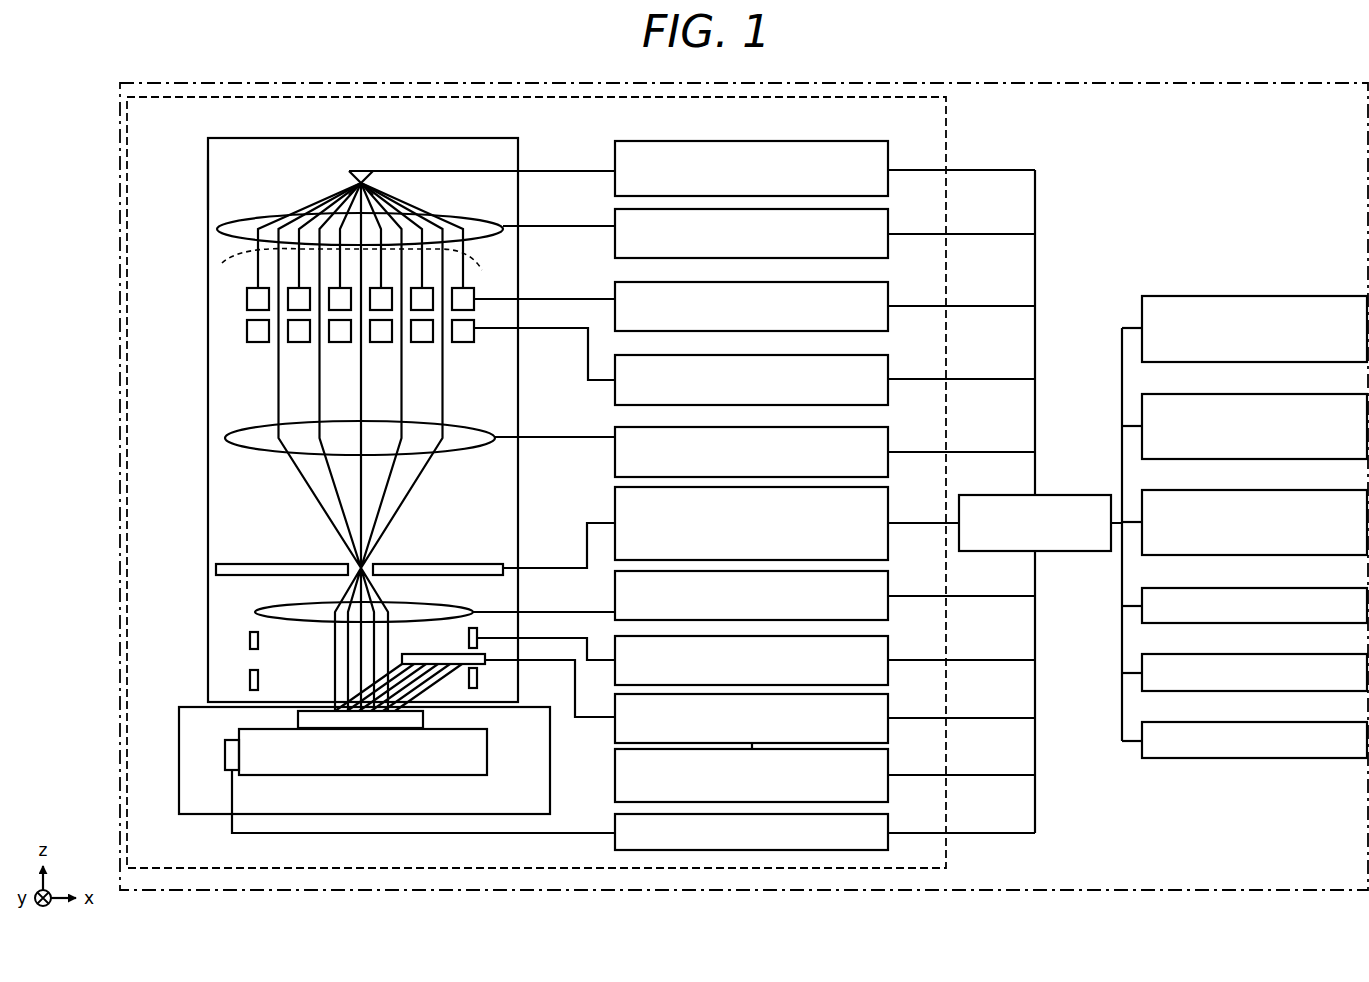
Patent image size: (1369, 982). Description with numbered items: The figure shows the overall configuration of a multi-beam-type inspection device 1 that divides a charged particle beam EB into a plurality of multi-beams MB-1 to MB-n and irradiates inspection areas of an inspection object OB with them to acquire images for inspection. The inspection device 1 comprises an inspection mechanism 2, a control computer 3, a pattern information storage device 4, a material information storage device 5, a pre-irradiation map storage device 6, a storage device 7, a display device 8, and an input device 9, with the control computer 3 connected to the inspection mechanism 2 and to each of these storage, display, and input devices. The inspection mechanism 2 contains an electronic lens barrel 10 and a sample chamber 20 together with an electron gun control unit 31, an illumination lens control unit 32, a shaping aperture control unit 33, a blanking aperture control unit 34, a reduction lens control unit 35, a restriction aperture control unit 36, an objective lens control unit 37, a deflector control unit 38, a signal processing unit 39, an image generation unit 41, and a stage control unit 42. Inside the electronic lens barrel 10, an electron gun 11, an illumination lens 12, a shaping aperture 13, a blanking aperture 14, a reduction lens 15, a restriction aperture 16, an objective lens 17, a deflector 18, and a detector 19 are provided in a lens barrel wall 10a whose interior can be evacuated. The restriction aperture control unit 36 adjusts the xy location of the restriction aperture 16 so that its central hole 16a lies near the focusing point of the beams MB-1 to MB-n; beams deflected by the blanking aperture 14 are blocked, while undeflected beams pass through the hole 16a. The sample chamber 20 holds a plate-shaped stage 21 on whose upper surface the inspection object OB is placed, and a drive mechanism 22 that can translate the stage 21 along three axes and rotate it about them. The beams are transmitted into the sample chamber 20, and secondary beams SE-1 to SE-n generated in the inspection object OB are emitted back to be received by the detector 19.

The inspection device 1 is at (120, 107).
The inspection mechanism 2 is at (947, 101).
The control computer 3 is at (1065, 497).
The pattern information storage device 4 is at (1320, 297).
The material information storage device 5 is at (1320, 395).
The pre-irradiation map storage device 6 is at (1320, 491).
The storage device 7 is at (1320, 589).
The display device 8 is at (1320, 655).
The input device 9 is at (1320, 723).
The electronic lens barrel 10 is at (449, 139).
The lens barrel wall 10a is at (208, 186).
The electron gun 11 is at (358, 169).
The illumination lens 12 is at (217, 227).
The shaping aperture 13 is at (247, 297).
The blanking aperture 14 is at (247, 330).
The reduction lens 15 is at (225, 438).
The restriction aperture 16 is at (216, 569).
The hole 16a is at (380, 557).
The objective lens 17 is at (255, 612).
The deflector 18 is at (250, 641).
The detector 19 is at (447, 652).
The sample chamber 20 is at (200, 815).
The stage 21 is at (292, 776).
The drive mechanism 22 is at (225, 752).
The electron gun control unit 31 is at (889, 145).
The illumination lens control unit 32 is at (889, 213).
The shaping aperture control unit 33 is at (889, 286).
The blanking aperture control unit 34 is at (889, 359).
The reduction lens control unit 35 is at (889, 431).
The restriction aperture control unit 36 is at (889, 491).
The objective lens control unit 37 is at (889, 575).
The deflector control unit 38 is at (889, 640).
The signal processing unit 39 is at (889, 698).
The image generation unit 41 is at (889, 753).
The stage control unit 42 is at (889, 818).
The charged particle beam EB is at (236, 262).
The first multi-beam MB-1 is at (264, 365).
The n-th multi-beam MB-n is at (453, 375).
The first secondary beam SE-1 is at (440, 691).
The n-th secondary beam SE-n is at (394, 656).
The inspection object OB is at (298, 718).